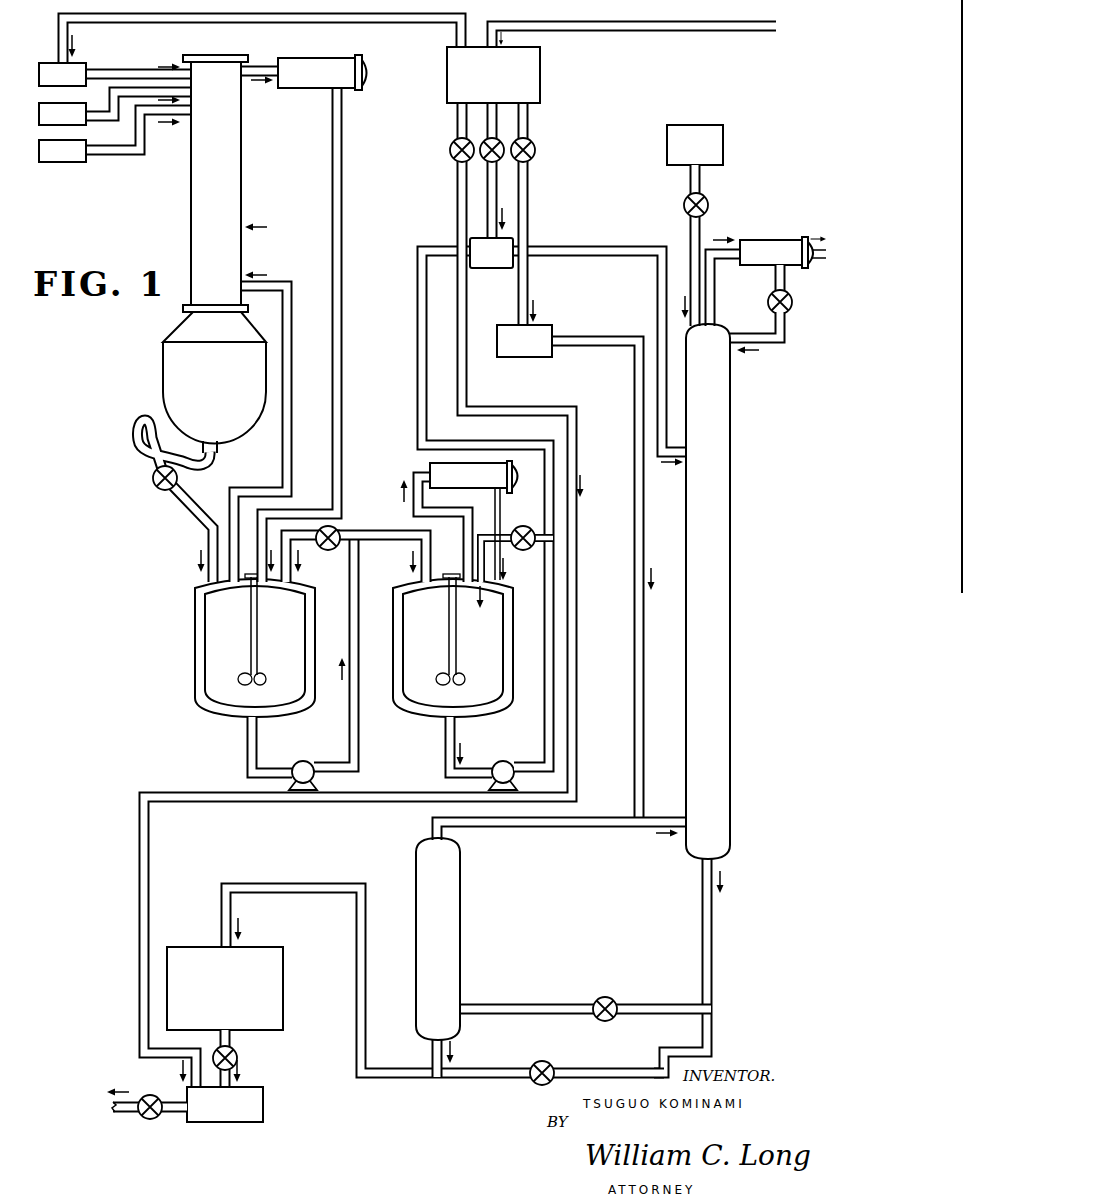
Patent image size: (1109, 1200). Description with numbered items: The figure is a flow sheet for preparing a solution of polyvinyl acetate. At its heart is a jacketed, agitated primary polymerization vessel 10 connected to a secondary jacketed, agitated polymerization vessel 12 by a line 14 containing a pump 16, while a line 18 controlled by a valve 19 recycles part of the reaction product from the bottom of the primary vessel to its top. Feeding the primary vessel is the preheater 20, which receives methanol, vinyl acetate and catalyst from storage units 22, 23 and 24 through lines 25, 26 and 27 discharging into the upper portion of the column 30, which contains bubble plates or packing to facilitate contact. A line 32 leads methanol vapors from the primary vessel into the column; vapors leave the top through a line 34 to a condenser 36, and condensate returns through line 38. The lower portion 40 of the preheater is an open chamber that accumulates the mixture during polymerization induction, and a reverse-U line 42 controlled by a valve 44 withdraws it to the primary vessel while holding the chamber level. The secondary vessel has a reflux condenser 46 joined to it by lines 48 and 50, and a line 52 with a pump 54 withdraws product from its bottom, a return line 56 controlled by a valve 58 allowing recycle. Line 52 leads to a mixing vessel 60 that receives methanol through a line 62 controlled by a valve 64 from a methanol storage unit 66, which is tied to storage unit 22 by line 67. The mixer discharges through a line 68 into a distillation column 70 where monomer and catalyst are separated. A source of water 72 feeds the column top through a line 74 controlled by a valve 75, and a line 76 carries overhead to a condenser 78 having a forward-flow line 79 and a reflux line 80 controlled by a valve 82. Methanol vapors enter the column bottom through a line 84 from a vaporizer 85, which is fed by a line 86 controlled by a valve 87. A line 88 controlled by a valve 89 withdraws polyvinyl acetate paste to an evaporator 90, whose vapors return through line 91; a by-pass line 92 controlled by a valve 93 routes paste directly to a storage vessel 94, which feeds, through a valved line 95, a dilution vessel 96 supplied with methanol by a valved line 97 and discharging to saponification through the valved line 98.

The primary polymerization vessel 10 is at (193, 685).
The secondary polymerization vessel 12 is at (392, 697).
The line 14 is at (359, 740).
The pump 16 is at (315, 778).
The line 18 is at (345, 527).
The valve 19 is at (332, 552).
The preheater 20 is at (265, 227).
The storage unit 22 is at (50, 63).
The storage unit 23 is at (50, 103).
The storage unit 24 is at (72, 162).
The line 25 is at (104, 70).
The line 26 is at (103, 115).
The line 27 is at (135, 160).
The column 30 is at (241, 183).
The line 32 is at (293, 344).
The line 34 is at (273, 47).
The condenser 36 is at (334, 66).
The line 38 is at (343, 199).
The lower portion 40 is at (165, 360).
The line 42 is at (178, 505).
The valve 44 is at (158, 483).
The reflux condenser 46 is at (440, 470).
The line 48 is at (468, 553).
The line 50 is at (502, 503).
The line 52 is at (549, 695).
The pump 54 is at (497, 766).
The return line 56 is at (510, 549).
The valve 58 is at (506, 521).
The mixing vessel 60 is at (495, 262).
The line 62 is at (496, 172).
The valve 64 is at (489, 160).
The methanol storage unit 66 is at (530, 67).
The line 67 is at (416, 27).
The line 68 is at (612, 251).
The distillation column 70 is at (718, 515).
The source of water 72 is at (695, 130).
The line 74 is at (700, 222).
The valve 75 is at (708, 196).
The line 76 is at (713, 281).
The condenser 78 is at (783, 248).
The line 79 is at (815, 262).
The line 80 is at (767, 352).
The valve 82 is at (783, 316).
The line 84 is at (644, 719).
The vaporizer 85 is at (537, 335).
The line 86 is at (530, 208).
The valve 87 is at (535, 157).
The line 88 is at (712, 953).
The valve 89 is at (613, 1018).
The evaporator 90 is at (450, 943).
The line 91 is at (522, 828).
The by-pass line 92 is at (597, 1077).
The valve 93 is at (533, 1067).
The storage vessel 94 is at (280, 1017).
The valved line 95 is at (230, 1037).
The dilution vessel 96 is at (253, 1097).
The valved line 97 is at (245, 800).
The valved line 98 is at (165, 1112).